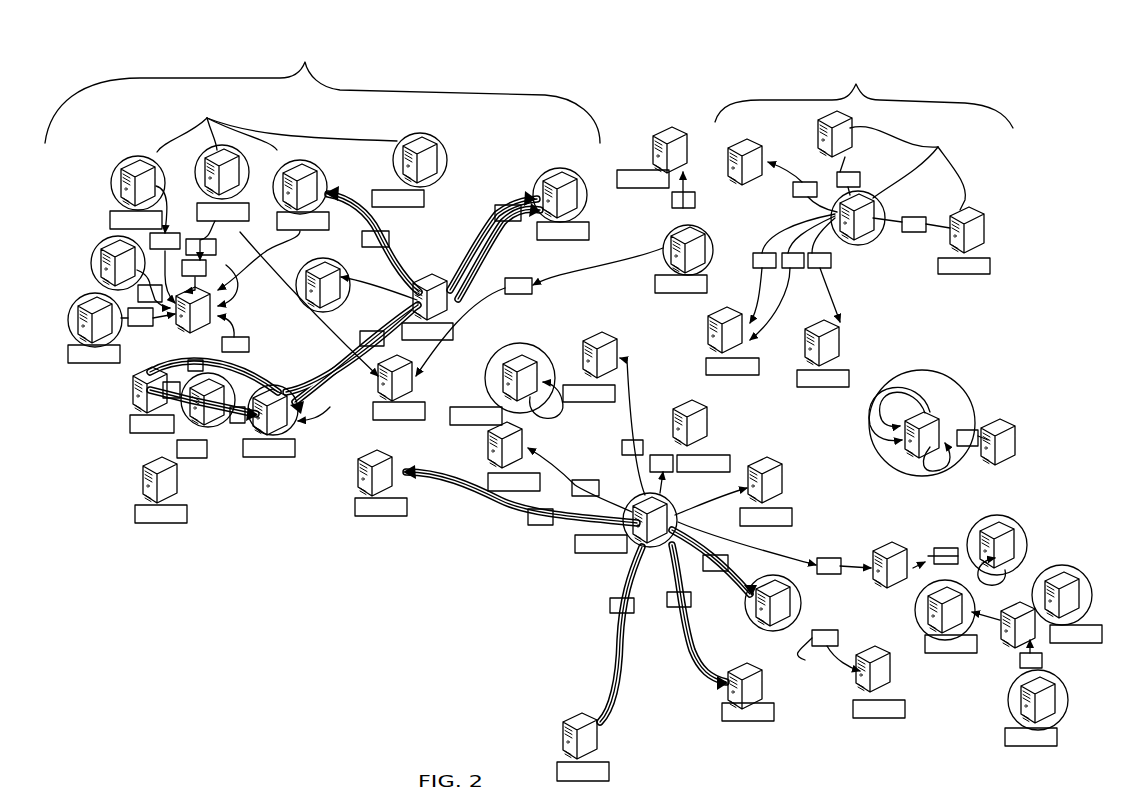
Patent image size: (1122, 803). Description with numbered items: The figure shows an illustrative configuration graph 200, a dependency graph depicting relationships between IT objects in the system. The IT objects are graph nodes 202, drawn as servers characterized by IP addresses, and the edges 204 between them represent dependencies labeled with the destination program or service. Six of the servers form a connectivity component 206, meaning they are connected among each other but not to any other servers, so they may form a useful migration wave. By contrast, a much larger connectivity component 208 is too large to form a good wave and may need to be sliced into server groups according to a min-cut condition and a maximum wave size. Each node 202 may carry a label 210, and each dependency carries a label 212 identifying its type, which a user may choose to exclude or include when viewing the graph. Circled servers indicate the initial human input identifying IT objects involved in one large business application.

The configuration graph 200 is at (607, 23).
The graph node 202 is at (207, 118).
The edge 204 is at (260, 300).
The connectivity component 206 is at (864, 92).
The connectivity component 208 is at (305, 62).
The label 210 is at (222, 222).
The label 212 is at (362, 238).